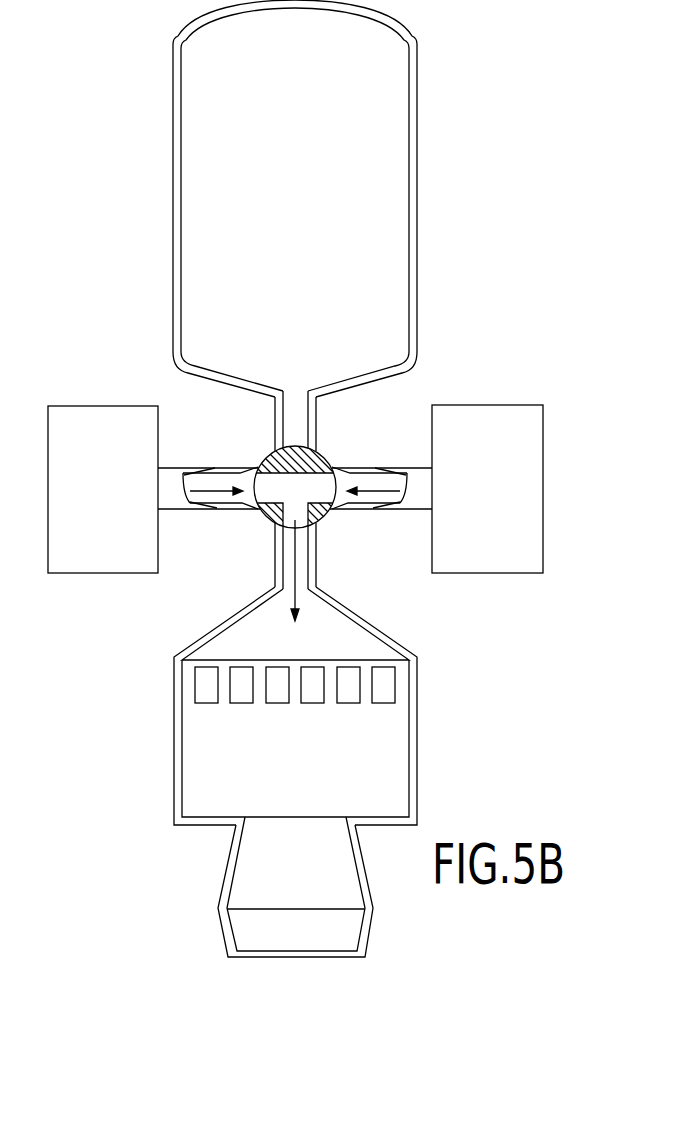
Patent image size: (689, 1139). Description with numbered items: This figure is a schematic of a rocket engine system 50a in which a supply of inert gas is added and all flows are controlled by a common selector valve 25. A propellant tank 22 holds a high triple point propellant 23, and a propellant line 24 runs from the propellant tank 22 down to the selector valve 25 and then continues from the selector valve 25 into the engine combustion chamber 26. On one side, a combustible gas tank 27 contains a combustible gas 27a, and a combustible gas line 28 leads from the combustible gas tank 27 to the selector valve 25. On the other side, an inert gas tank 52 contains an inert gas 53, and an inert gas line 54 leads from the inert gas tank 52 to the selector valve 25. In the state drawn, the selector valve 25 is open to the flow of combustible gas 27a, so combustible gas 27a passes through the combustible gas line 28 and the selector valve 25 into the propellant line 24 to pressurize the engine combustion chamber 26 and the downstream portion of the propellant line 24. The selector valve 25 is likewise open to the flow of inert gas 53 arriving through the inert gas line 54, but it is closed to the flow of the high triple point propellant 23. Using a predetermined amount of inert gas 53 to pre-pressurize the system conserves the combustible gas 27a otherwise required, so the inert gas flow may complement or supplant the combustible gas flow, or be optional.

The propellant tank 22 is at (420, 168).
The high triple point propellant 23 is at (347, 113).
The propellant line 24 is at (317, 420).
The selector valve 25 is at (320, 527).
The engine combustion chamber 26 is at (175, 732).
The combustible gas tank 27 is at (98, 405).
The combustible gas 27a is at (97, 550).
The combustible gas line 28 is at (167, 468).
The rocket engine system 50a is at (130, 279).
The inert gas tank 52 is at (543, 467).
The inert gas 53 is at (465, 425).
The inert gas line 54 is at (410, 467).